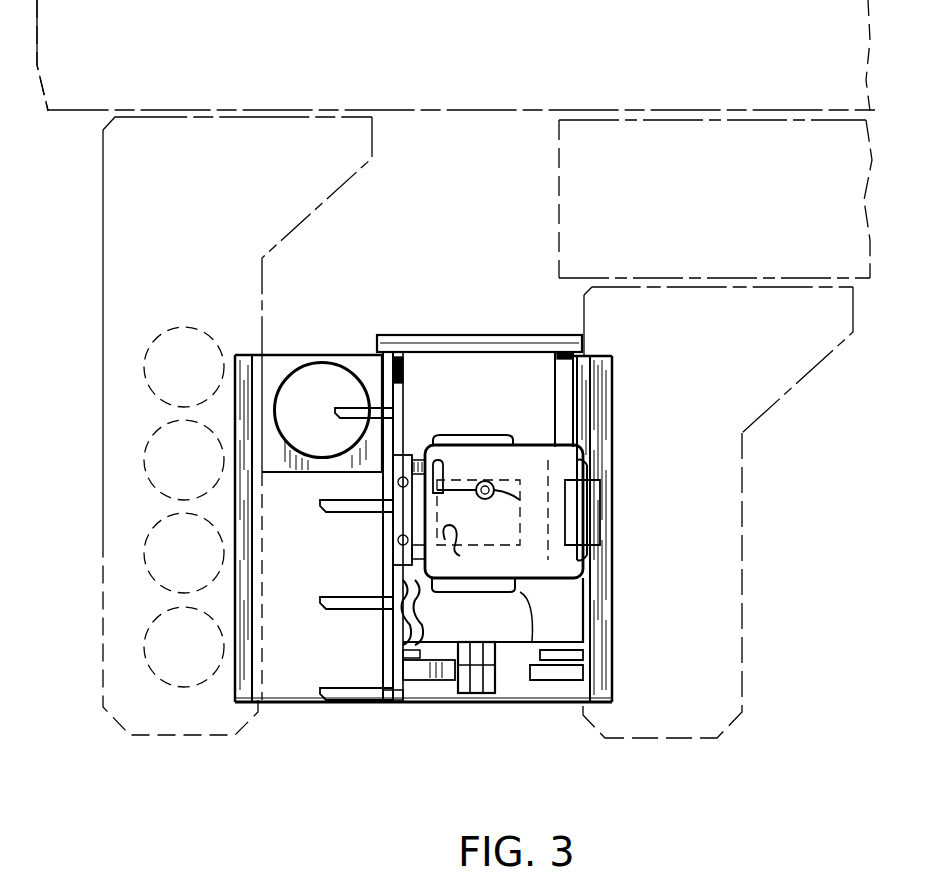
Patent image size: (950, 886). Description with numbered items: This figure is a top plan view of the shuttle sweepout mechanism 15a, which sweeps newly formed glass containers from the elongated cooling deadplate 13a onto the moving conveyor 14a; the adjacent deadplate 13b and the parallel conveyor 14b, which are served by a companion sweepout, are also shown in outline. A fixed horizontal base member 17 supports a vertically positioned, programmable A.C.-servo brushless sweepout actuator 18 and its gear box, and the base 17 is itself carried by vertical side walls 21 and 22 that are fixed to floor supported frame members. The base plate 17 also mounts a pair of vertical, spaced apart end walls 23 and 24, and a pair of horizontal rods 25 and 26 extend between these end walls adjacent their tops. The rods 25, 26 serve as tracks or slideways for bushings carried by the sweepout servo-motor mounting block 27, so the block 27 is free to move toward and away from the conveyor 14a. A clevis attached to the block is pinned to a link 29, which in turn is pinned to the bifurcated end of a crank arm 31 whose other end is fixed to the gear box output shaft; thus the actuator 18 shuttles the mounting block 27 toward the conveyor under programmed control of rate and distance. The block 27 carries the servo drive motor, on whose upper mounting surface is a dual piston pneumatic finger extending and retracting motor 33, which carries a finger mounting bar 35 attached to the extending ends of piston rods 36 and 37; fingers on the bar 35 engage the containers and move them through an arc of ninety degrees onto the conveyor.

The cooling deadplate 13a is at (163, 682).
The cooling deadplate 13b is at (742, 689).
The moving conveyor 14a is at (475, 58).
The conveyor 14b is at (697, 219).
The sweepout mechanism 15a is at (509, 714).
The fixed horizontal base member 17 is at (552, 703).
The sweepout actuator 18 is at (316, 378).
The vertical side wall 21 is at (244, 688).
The vertical side wall 22 is at (600, 695).
The end wall 23 is at (426, 690).
The end wall 24 is at (522, 343).
The horizontal rod 25 is at (413, 372).
The horizontal rod 26 is at (568, 405).
The sweepout servo-motor mounting block 27 is at (572, 618).
The link 29 is at (477, 660).
The crank arm 31 is at (460, 702).
The finger extending and retracting motor 33 is at (477, 462).
The finger mounting bar 35 is at (391, 713).
The piston rod 36 is at (420, 468).
The piston rod 37 is at (427, 612).